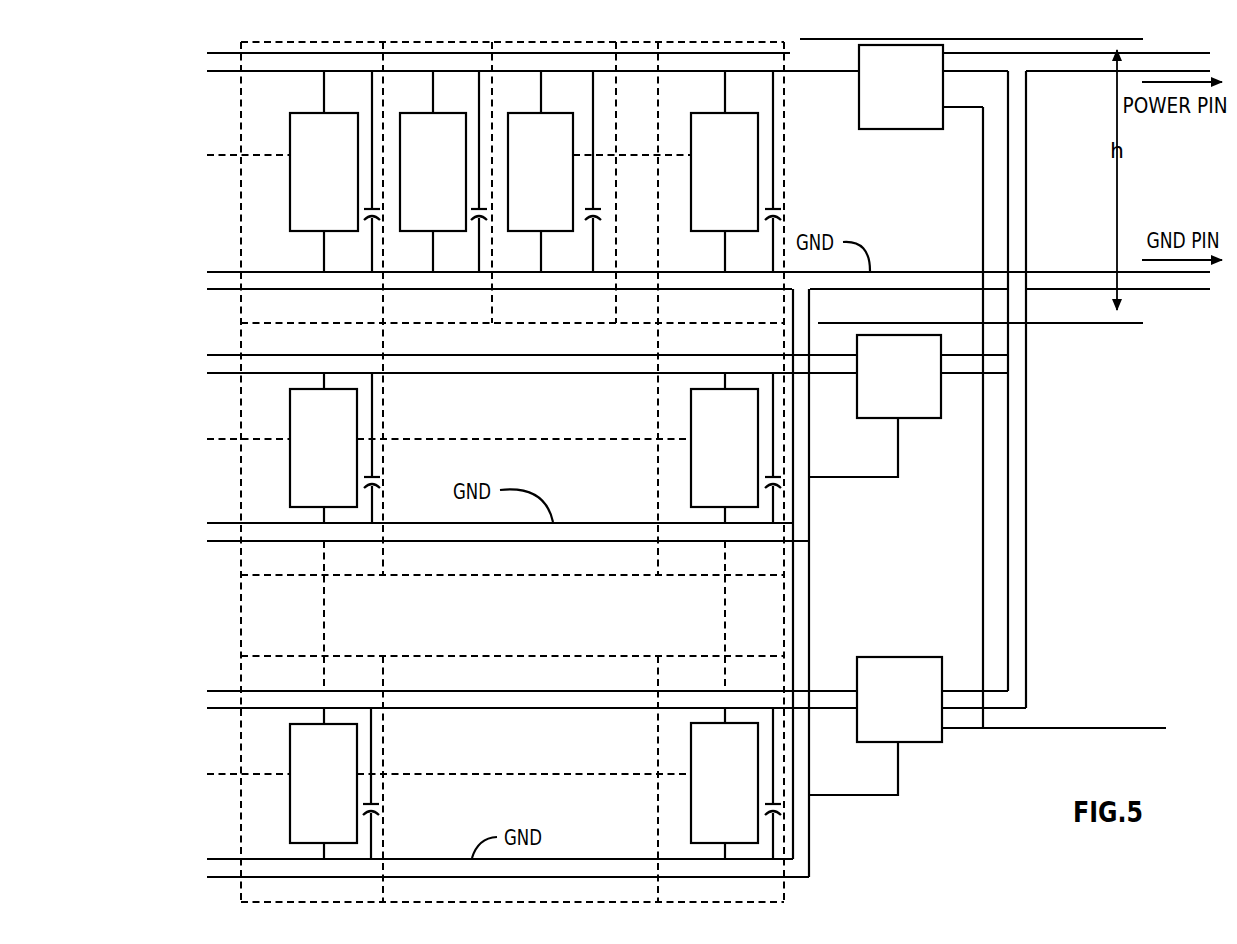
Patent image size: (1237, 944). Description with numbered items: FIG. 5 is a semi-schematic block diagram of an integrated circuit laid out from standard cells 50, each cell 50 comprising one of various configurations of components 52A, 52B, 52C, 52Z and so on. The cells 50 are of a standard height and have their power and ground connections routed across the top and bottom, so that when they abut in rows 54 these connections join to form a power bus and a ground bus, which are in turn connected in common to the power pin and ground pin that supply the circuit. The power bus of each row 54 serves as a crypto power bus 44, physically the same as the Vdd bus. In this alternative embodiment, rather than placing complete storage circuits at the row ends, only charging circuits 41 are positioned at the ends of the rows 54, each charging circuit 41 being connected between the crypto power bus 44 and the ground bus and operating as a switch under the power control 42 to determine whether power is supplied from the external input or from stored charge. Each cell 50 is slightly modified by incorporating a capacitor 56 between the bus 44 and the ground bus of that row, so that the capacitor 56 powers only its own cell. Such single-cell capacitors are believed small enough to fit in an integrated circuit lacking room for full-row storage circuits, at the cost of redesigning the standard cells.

The charging circuit 41 is at (890, 98).
The power control 42 is at (982, 580).
The crypto power bus 44 is at (837, 73).
The standard cell 50 is at (338, 315).
The component 52A is at (308, 183).
The component 52B is at (417, 183).
The component 52C is at (525, 183).
The component 52Z is at (709, 183).
The row 54 is at (208, 130).
The capacitor 56 is at (382, 214).